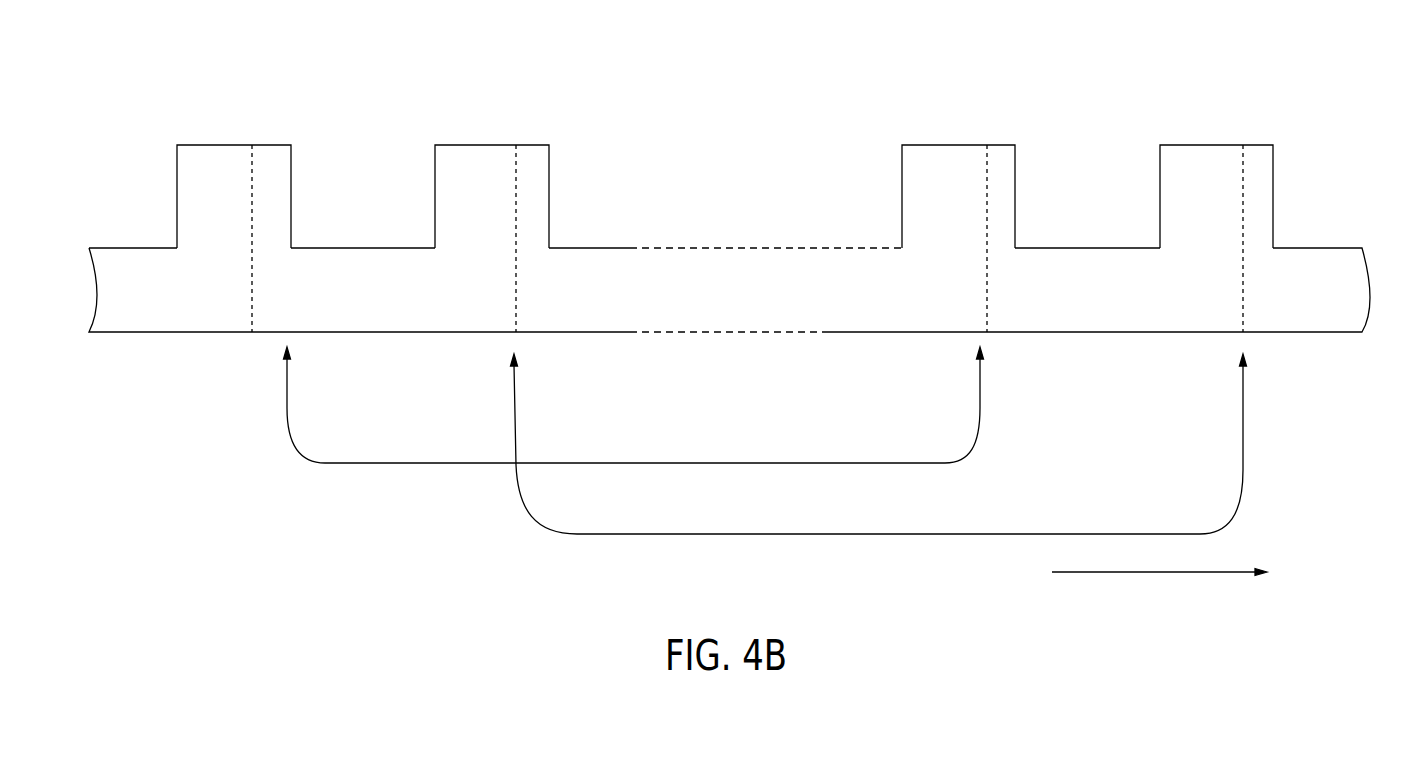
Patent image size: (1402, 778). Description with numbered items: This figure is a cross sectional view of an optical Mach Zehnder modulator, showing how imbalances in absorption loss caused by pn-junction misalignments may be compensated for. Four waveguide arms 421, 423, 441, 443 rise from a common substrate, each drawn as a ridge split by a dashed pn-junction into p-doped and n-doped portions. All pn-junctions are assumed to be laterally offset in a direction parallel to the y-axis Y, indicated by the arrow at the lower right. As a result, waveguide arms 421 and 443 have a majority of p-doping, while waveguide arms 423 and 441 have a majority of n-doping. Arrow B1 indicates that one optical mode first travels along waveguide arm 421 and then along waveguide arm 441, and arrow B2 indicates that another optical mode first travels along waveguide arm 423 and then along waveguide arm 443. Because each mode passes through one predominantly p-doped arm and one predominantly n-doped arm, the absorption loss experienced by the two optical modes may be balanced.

The waveguide arm 421 is at (229, 124).
The waveguide arm 423 is at (499, 194).
The waveguide arm 441 is at (963, 194).
The waveguide arm 443 is at (1217, 194).
The arrow B1 is at (731, 463).
The arrow B2 is at (850, 534).
The y-axis Y is at (1163, 587).